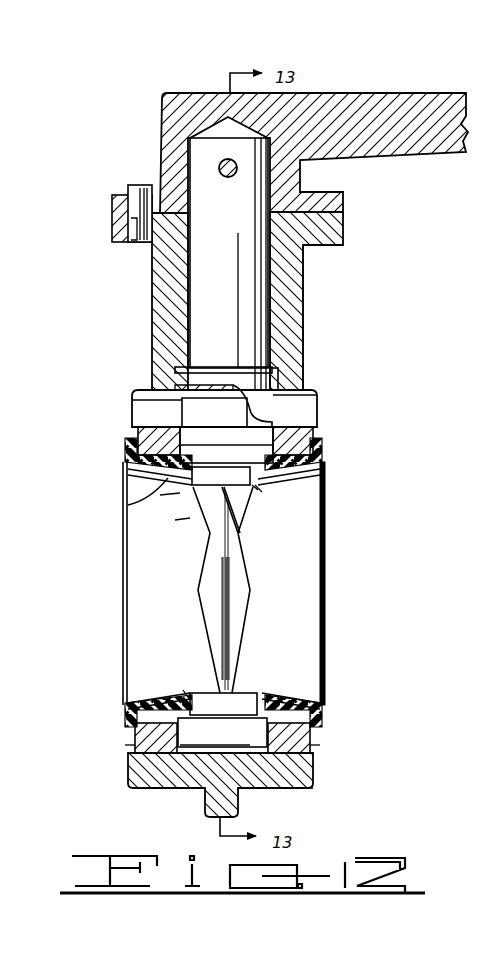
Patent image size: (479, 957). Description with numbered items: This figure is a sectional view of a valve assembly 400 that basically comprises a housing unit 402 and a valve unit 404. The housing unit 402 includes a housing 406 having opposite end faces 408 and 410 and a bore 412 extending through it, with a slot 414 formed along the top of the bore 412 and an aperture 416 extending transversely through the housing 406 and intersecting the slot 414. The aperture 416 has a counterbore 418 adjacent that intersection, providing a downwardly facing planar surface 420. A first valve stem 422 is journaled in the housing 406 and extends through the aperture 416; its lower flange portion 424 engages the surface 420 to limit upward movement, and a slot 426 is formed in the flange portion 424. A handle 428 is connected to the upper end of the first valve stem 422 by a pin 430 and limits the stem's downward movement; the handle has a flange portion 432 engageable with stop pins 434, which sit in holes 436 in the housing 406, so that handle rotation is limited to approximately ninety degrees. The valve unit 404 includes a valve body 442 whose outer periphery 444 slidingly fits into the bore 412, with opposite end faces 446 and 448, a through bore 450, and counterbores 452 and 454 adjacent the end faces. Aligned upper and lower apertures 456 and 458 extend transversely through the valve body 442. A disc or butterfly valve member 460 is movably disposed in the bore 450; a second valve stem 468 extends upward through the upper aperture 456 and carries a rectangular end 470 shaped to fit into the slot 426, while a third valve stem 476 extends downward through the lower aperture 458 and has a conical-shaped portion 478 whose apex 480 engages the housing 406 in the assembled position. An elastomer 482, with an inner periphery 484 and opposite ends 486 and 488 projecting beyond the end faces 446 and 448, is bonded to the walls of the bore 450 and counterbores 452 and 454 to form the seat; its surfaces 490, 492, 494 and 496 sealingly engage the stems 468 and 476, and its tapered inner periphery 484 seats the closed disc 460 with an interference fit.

The valve assembly 400 is at (366, 201).
The housing unit 402 is at (318, 270).
The valve unit 404 is at (286, 772).
The housing 406 is at (290, 303).
The end face 408 is at (128, 776).
The end face 410 is at (312, 780).
The bore 412 is at (160, 758).
The slot 414 is at (160, 396).
The aperture 416 is at (186, 258).
The counterbore 418 is at (172, 374).
The planar surface 420 is at (282, 376).
The first valve stem 422 is at (205, 293).
The lower flange portion 424 is at (312, 400).
The slot 426 is at (140, 409).
The handle 428 is at (386, 105).
The pin 430 is at (221, 164).
The flange portion 432 is at (118, 200).
The stop pins 434 is at (138, 210).
The holes 436 is at (135, 226).
The valve body 442 is at (300, 481).
The outer periphery 444 is at (312, 758).
The end face 446 is at (126, 750).
The end face 448 is at (315, 433).
The bore 450 is at (140, 471).
The counterbore 452 is at (132, 733).
The counterbore 454 is at (312, 736).
The upper aperture 456 is at (184, 441).
The lower aperture 458 is at (222, 732).
The disc or butterfly valve member 460 is at (238, 575).
The second valve stem 468 is at (256, 489).
The rectangular end 470 is at (230, 416).
The third valve stem 476 is at (285, 700).
The conical-shaped portion 478 is at (222, 760).
The apex 480 is at (212, 748).
The elastomer 482 is at (172, 700).
The inner periphery 484 is at (160, 482).
The end 486 is at (125, 712).
The end 488 is at (325, 713).
The surface 490 is at (221, 477).
The surface 492 is at (226, 455).
The surface 494 is at (223, 704).
The surface 496 is at (186, 697).